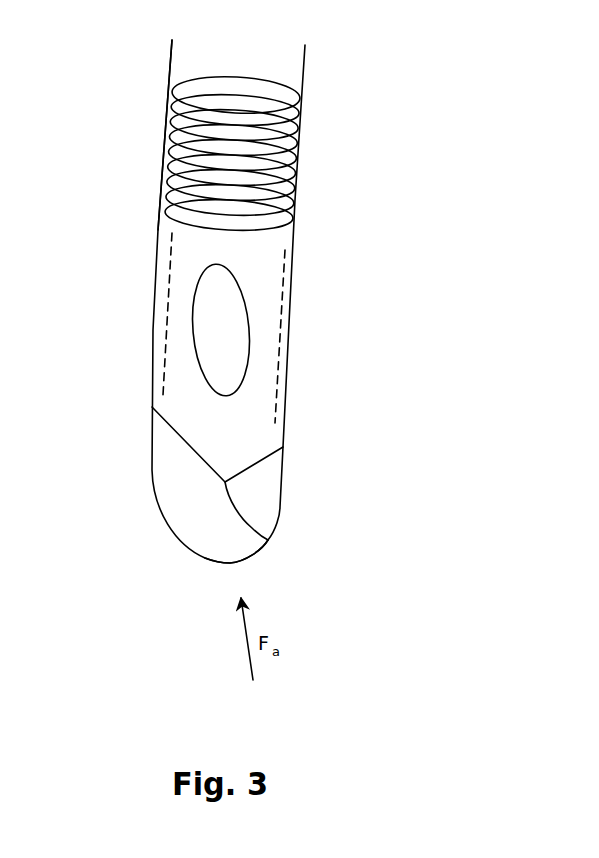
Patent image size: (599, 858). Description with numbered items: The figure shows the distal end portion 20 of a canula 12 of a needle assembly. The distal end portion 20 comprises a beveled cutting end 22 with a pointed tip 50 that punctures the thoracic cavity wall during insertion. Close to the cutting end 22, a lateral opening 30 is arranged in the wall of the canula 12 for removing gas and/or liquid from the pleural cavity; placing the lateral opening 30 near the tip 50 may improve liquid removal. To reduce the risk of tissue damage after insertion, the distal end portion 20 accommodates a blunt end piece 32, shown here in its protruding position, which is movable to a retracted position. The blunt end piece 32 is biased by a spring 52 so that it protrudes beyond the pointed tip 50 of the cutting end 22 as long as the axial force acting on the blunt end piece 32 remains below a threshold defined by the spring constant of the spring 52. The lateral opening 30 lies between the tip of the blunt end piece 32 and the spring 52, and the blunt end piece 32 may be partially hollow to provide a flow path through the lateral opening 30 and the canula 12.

The canula 12 is at (170, 57).
The distal end portion 20 is at (333, 300).
The beveled cutting end 22 is at (170, 442).
The lateral opening 30 is at (195, 318).
The blunt end piece 32 is at (228, 562).
The pointed tip 50 is at (270, 545).
The spring 52 is at (163, 155).